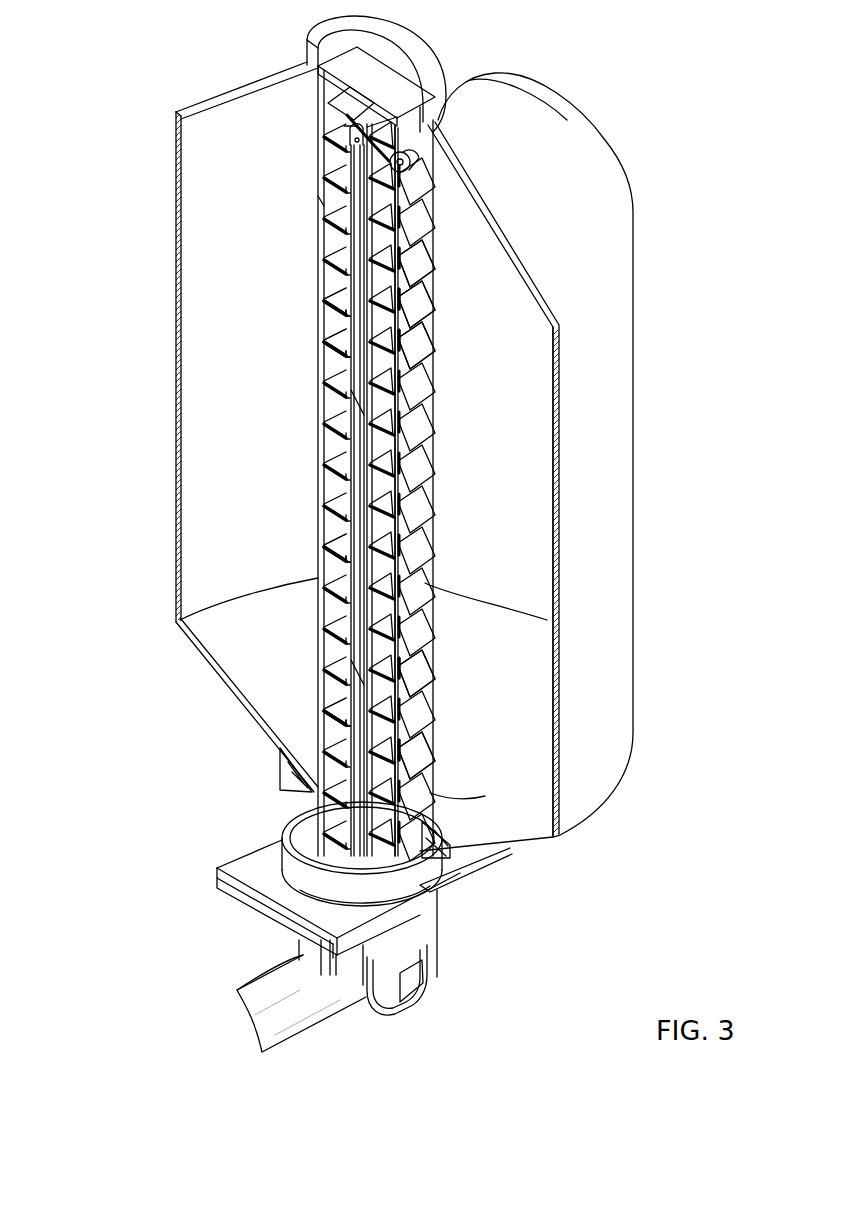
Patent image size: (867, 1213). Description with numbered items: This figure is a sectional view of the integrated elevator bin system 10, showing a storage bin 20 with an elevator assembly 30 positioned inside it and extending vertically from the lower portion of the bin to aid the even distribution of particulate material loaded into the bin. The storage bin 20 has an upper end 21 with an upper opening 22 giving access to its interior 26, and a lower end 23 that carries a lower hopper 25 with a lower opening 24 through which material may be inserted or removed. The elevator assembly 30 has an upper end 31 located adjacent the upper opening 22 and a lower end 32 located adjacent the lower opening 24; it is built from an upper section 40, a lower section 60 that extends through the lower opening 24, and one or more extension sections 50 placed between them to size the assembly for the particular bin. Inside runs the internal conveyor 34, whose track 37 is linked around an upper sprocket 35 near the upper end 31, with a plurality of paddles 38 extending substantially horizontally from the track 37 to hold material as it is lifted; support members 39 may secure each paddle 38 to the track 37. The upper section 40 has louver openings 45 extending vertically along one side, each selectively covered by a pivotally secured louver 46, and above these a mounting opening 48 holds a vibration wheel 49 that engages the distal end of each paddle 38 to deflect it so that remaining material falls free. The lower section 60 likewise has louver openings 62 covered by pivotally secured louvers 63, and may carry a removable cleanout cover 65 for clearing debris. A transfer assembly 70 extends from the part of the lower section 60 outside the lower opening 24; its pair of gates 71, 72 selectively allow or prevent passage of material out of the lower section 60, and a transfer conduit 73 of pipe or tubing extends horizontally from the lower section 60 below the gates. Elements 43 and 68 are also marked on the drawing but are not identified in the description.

The integrated elevator bin system 10 is at (642, 92).
The storage bin 20 is at (645, 312).
The upper end 21 is at (537, 123).
The upper opening 22 is at (306, 62).
The lower end 23 is at (268, 806).
The lower opening 24 is at (487, 795).
The lower hopper 25 is at (220, 642).
The interior 26 is at (490, 376).
The elevator assembly 30 is at (306, 450).
The upper end 31 is at (320, 70).
The lower end 32 is at (427, 917).
The internal conveyor 34 is at (330, 403).
The upper sprocket 35 is at (350, 128).
The track 37 is at (325, 200).
The paddles 38 is at (322, 330).
The support members 39 is at (345, 552).
The upper section 40 is at (305, 282).
The plate 43 is at (422, 297).
The louver openings 45 is at (380, 237).
The louver 46 is at (435, 318).
The mounting opening 48 is at (410, 103).
The vibration wheel 49 is at (432, 132).
The extension sections 50 is at (445, 506).
The lower section 60 is at (305, 697).
The louver openings 62 is at (362, 670).
The louver 63 is at (430, 763).
The cleanout cover 65 is at (413, 983).
The plate 68 is at (433, 648).
The transfer assembly 70 is at (226, 983).
The gate 71 is at (240, 900).
The gate 72 is at (493, 860).
The transfer conduit 73 is at (307, 1008).